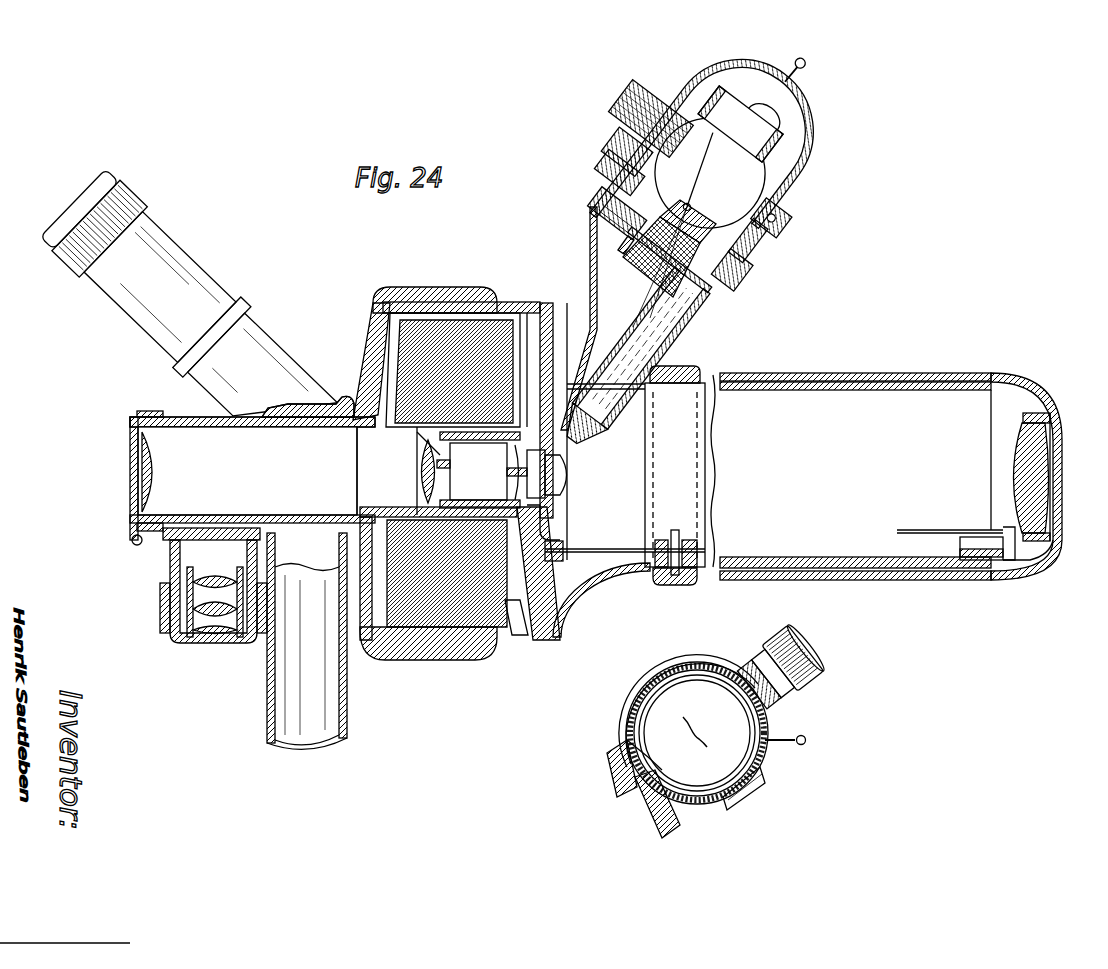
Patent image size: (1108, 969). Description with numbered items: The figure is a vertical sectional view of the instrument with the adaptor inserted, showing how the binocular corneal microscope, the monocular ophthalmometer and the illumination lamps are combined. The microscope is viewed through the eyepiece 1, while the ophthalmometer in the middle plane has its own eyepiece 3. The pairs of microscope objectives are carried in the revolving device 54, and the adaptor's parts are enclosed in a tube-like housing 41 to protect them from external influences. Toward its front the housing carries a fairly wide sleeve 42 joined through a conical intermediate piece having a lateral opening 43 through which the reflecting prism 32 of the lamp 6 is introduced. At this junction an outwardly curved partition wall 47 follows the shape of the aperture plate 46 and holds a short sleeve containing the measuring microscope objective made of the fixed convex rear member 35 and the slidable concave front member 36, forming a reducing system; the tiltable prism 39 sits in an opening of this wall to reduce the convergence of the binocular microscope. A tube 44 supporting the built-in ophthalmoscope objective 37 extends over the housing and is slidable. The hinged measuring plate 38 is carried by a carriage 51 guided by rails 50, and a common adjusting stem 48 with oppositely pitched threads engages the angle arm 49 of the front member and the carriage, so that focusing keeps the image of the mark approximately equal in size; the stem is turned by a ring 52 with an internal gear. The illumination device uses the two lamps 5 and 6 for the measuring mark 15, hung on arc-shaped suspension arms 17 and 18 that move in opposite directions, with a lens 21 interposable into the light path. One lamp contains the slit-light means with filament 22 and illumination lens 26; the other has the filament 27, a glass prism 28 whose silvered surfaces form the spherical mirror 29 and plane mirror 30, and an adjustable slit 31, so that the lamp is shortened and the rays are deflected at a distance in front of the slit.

The eyepiece 1 is at (70, 205).
The eyepiece 3 is at (208, 645).
The lamp 5 is at (730, 741).
The lamp 6 is at (780, 118).
The measuring mark 15 is at (752, 795).
The suspension arm 17 is at (612, 762).
The suspension arm 18 is at (650, 112).
The lens 21 is at (745, 255).
The filament 22 is at (703, 745).
The illumination lens 26 is at (823, 650).
The filament 27 is at (687, 205).
The prism 28 is at (728, 280).
The spherical mirror 29 is at (620, 262).
The plane mirror 30 is at (640, 232).
The adjustable slit 31 is at (660, 350).
The reflecting prism 32 is at (580, 447).
The rear objective member 35 is at (420, 450).
The front objective member 36 is at (548, 548).
The ophthalmoscope objective 37 is at (1060, 473).
The measuring plate 38 is at (942, 540).
The prism 39 is at (575, 475).
The tube-like housing 41 is at (858, 375).
The sleeve 42 is at (503, 303).
The lateral opening 43 is at (597, 323).
The tube 44 is at (1015, 386).
The aperture plate 46 is at (527, 333).
The partition wall 47 is at (528, 628).
The stem 48 is at (904, 576).
The angle arm 49 is at (548, 556).
The rails 50 is at (985, 576).
The carriage 51 is at (1010, 572).
The ring 52 is at (688, 588).
The revolving device 54 is at (440, 328).